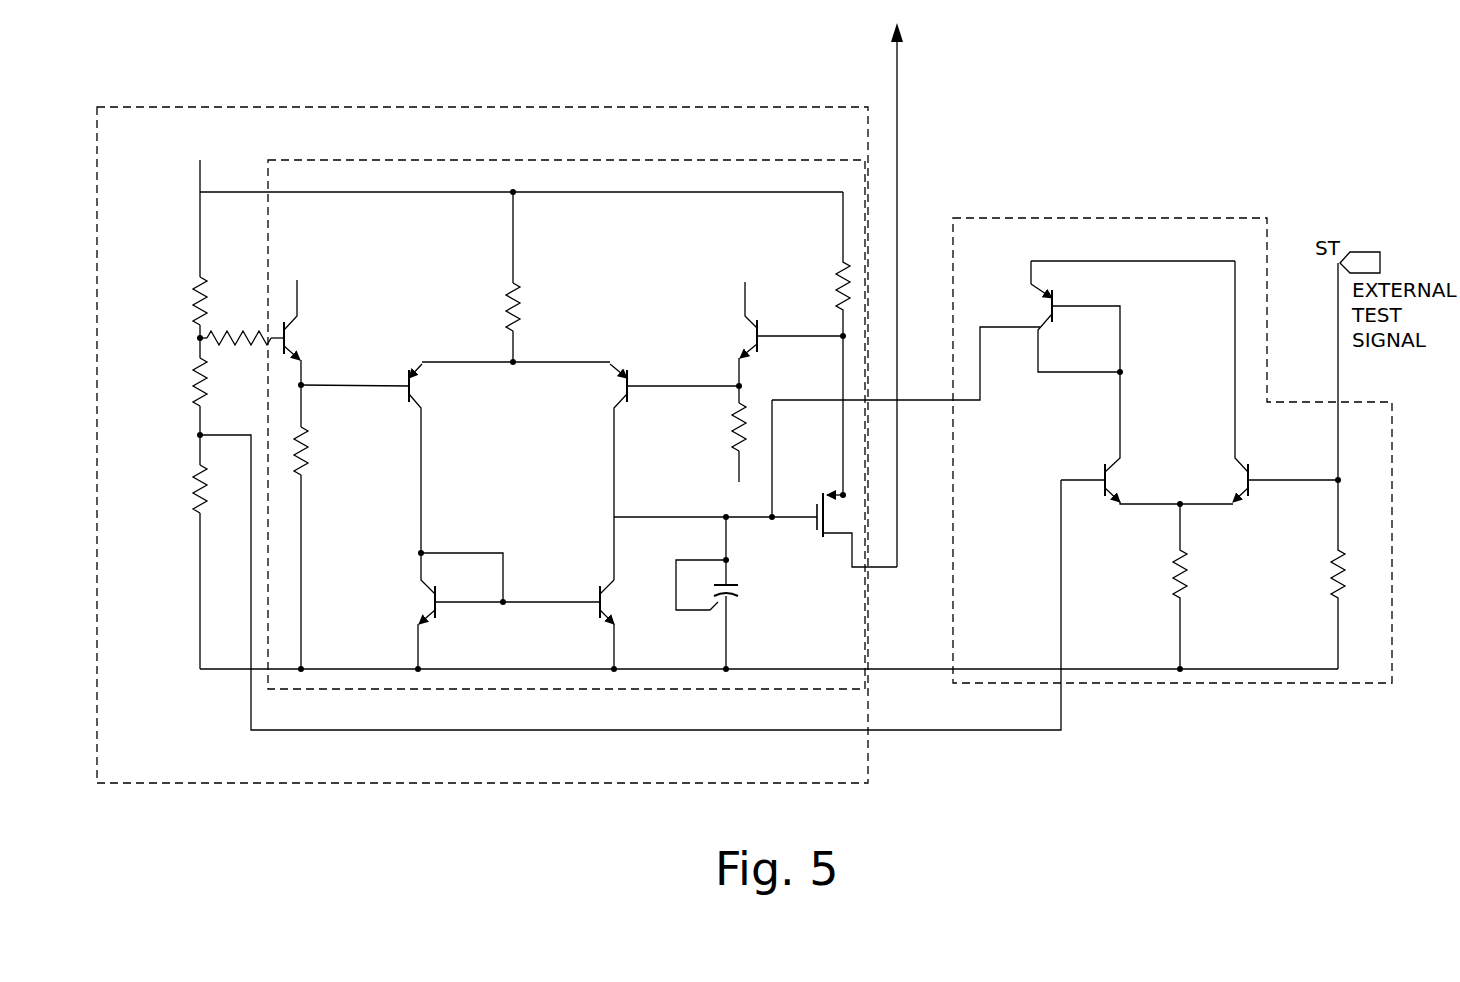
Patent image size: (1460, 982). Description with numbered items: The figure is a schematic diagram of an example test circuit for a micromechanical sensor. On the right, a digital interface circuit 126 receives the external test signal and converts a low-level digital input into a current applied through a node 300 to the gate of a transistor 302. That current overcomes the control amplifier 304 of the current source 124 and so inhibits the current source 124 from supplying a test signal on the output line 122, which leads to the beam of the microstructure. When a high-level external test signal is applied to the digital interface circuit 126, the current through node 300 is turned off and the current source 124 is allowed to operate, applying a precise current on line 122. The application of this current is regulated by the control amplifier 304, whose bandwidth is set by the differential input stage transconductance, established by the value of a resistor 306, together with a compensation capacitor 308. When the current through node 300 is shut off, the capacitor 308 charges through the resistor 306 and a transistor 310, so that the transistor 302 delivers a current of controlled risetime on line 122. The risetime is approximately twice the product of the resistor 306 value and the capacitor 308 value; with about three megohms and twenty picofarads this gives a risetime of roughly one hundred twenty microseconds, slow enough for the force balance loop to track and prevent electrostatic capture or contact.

The line 122 is at (897, 108).
The current source 124 is at (460, 106).
The digital interface circuit 126 is at (1163, 217).
The node 300 is at (935, 402).
The transistor 302 is at (826, 534).
The control amplifier 304 is at (557, 159).
The resistor 306 is at (508, 306).
The compensation capacitor 308 is at (736, 592).
The transistor 310 is at (614, 362).